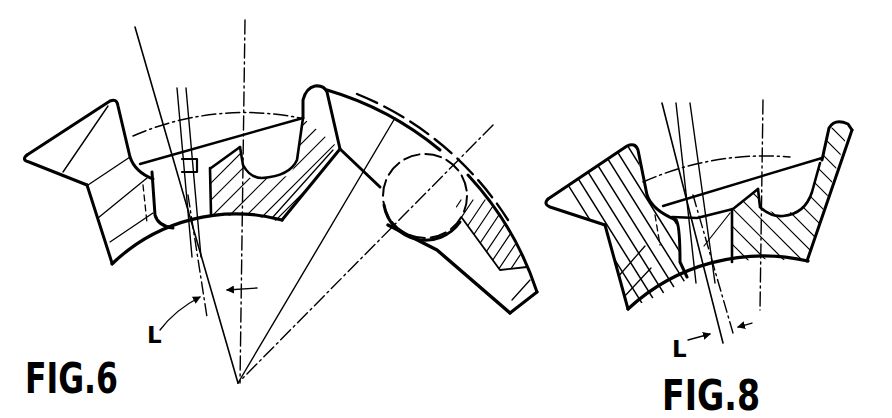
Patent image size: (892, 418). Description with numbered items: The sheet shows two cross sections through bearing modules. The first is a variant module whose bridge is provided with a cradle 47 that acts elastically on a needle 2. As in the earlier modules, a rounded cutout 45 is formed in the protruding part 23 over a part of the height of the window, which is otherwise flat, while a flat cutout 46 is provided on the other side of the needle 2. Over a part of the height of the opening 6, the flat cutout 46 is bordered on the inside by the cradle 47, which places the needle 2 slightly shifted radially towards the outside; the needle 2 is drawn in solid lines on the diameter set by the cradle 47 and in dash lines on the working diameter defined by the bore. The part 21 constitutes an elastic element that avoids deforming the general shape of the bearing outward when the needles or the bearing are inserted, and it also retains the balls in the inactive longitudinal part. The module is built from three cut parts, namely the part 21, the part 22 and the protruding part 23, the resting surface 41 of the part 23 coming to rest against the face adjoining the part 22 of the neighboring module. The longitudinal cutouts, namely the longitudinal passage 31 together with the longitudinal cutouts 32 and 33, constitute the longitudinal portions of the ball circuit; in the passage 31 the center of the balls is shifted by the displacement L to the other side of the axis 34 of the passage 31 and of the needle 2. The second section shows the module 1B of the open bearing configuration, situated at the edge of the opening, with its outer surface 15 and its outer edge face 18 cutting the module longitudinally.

In FIG. 6, the axis 34 is at (148, 60).
In FIG. 6, the rounded cutout 45 is at (130, 108).
In FIG. 8, the rounded cutout 45 is at (650, 180).
In FIG. 6, the resting surface 41 is at (60, 186).
In FIG. 8, the resting surface 41 is at (593, 227).
In FIG. 6, the protruding part 23 is at (113, 229).
In FIG. 8, the protruding part 23 is at (621, 292).
In FIG. 6, the longitudinal passage 31 is at (198, 222).
In FIG. 8, the longitudinal passage 31 is at (718, 268).
In FIG. 6, the part 22 is at (251, 216).
In FIG. 8, the part 22 is at (846, 122).
In FIG. 6, the longitudinal cutout 33 is at (278, 138).
In FIG. 6, the flat cutout 46 is at (482, 190).
In FIG. 6, the opening 6 is at (402, 137).
In FIG. 6, the needle 2 is at (383, 205).
In FIG. 6, the cradle 47 is at (427, 250).
In FIG. 6, the longitudinal cutout 32 is at (487, 293).
In FIG. 6, the part 21 is at (522, 314).
In FIG. 8, the outer surface 15 is at (733, 165).
In FIG. 8, the flat face 18 is at (824, 228).
In FIG. 8, the module 1B is at (592, 127).